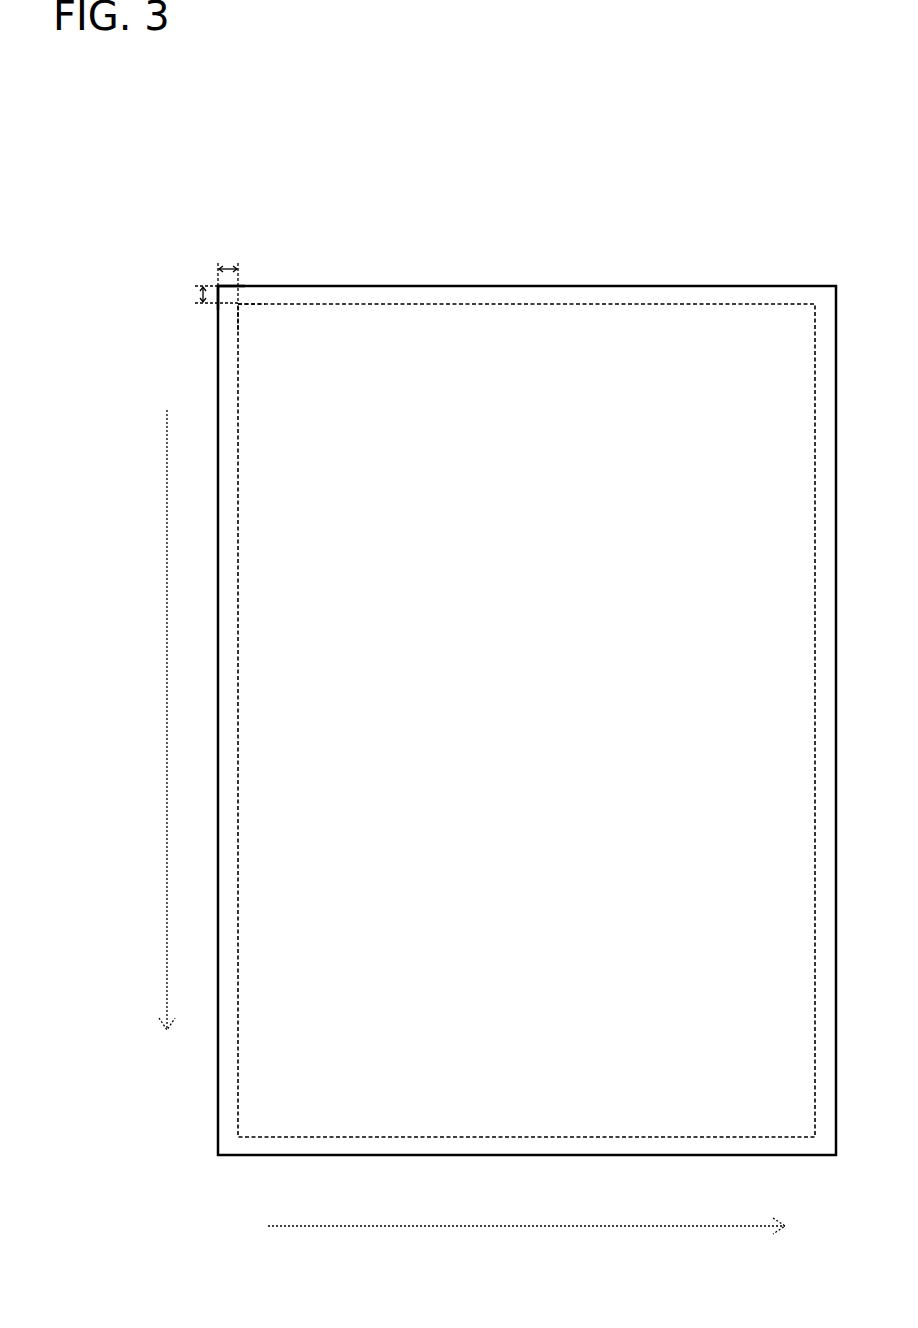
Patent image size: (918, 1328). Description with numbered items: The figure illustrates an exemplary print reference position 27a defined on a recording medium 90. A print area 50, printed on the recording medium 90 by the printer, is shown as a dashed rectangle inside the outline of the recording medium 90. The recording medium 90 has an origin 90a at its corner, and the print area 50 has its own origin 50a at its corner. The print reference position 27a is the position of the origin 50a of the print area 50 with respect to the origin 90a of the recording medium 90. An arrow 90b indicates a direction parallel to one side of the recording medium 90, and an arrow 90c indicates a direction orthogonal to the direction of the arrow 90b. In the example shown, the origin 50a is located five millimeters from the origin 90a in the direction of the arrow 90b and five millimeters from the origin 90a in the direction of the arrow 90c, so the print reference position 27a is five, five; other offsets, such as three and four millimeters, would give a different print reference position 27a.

The recording medium 90 is at (608, 296).
The print area 50 is at (660, 392).
The origin of recording medium 90a is at (218, 286).
The print reference position 27a is at (246, 276).
The origin of print area 50a is at (236, 316).
The arrow 90c is at (167, 710).
The arrow 90b is at (545, 1225).